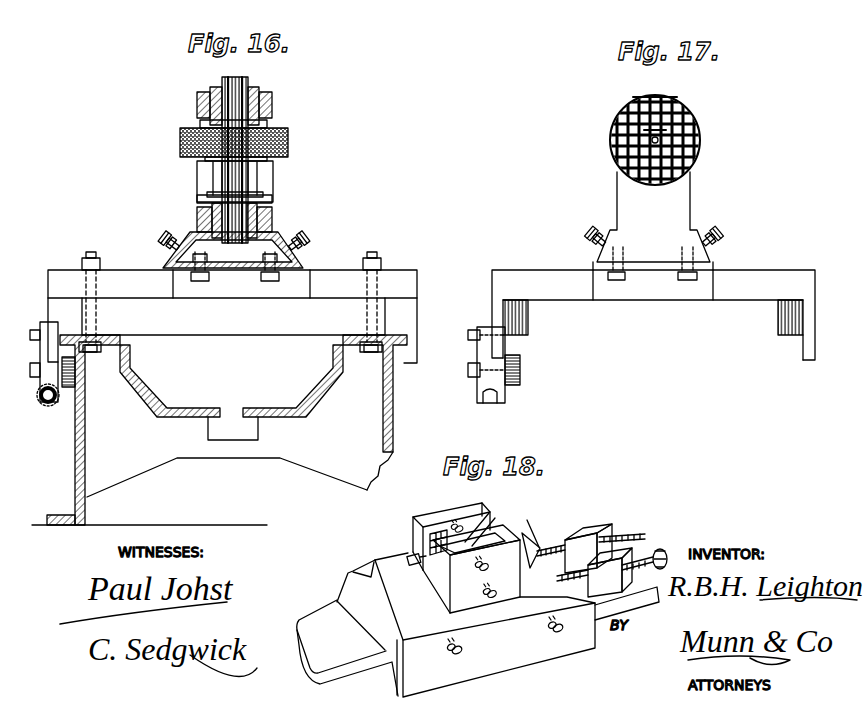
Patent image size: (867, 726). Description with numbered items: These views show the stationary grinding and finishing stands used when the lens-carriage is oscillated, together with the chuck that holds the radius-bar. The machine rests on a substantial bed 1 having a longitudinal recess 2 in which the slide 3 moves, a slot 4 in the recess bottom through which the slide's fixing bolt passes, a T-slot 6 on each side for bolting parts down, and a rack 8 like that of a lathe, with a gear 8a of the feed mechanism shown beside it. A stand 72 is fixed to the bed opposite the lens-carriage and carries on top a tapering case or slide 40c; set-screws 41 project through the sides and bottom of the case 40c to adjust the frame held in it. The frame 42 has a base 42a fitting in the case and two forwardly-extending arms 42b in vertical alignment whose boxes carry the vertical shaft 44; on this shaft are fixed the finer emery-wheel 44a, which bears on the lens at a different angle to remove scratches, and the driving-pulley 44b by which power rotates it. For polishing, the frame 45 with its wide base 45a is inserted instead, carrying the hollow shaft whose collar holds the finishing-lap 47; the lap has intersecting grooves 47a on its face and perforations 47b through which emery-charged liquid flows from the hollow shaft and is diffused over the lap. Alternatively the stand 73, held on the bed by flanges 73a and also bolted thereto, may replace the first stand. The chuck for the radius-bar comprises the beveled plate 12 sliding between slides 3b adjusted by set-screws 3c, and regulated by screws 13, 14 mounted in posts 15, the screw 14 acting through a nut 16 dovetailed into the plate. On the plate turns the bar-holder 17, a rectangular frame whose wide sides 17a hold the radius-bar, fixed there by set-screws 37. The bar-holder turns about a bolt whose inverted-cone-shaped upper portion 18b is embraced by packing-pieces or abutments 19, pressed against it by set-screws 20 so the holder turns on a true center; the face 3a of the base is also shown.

In FIG. 16, the bed 1 is at (112, 343).
In FIG. 16, the longitudinal recess 2 is at (231, 381).
In FIG. 18, the slide 3 is at (478, 641).
In FIG. 18, the base front face 3a is at (368, 566).
In FIG. 18, the slide 3b is at (400, 658).
In FIG. 18, the set-screws 3c is at (462, 656).
In FIG. 16, the slot 4 is at (240, 408).
In FIG. 16, the longitudinal T-slot 6 is at (230, 311).
In FIG. 16, the rack 8 is at (46, 404).
In FIG. 16, the gear 8a is at (68, 388).
In FIG. 17, the gear 8a is at (520, 377).
In FIG. 18, the plate 12 is at (485, 596).
In FIG. 18, the screw 13 is at (663, 548).
In FIG. 18, the screw 14 is at (624, 534).
In FIG. 18, the posts 15 is at (585, 528).
In FIG. 18, the nut 16 is at (530, 535).
In FIG. 18, the bar-holder 17 is at (466, 558).
In FIG. 18, the wide sides 17a is at (427, 513).
In FIG. 18, the inverted-cone-shaped upper portion 18b is at (470, 538).
In FIG. 18, the packing-pieces or abutments 19 is at (413, 538).
In FIG. 18, the set-screws 20 is at (497, 590).
In FIG. 18, the set-screws 37 is at (456, 515).
In FIG. 16, the upper case 40c is at (300, 256).
In FIG. 16, the set-screws 41 is at (162, 240).
In FIG. 17, the set-screws 41 is at (731, 246).
In FIG. 16, the frame 42 is at (268, 186).
In FIG. 16, the base 42a is at (420, 308).
In FIG. 16, the forwardly-extending arms 42b is at (273, 106).
In FIG. 16, the vertical shaft 44 is at (227, 86).
In FIG. 16, the emery-wheel 44a is at (292, 138).
In FIG. 16, the driving-pulley 44b is at (223, 182).
In FIG. 17, the frame 45 is at (653, 217).
In FIG. 17, the wide base 45a is at (653, 259).
In FIG. 17, the finishing-lap 47 is at (611, 146).
In FIG. 17, the intersecting grooves 47a is at (666, 102).
In FIG. 17, the perforations 47b is at (674, 130).
In FIG. 16, the stand 72 is at (340, 282).
In FIG. 17, the stand 73 is at (540, 281).
In FIG. 17, the flanges 73a is at (824, 310).